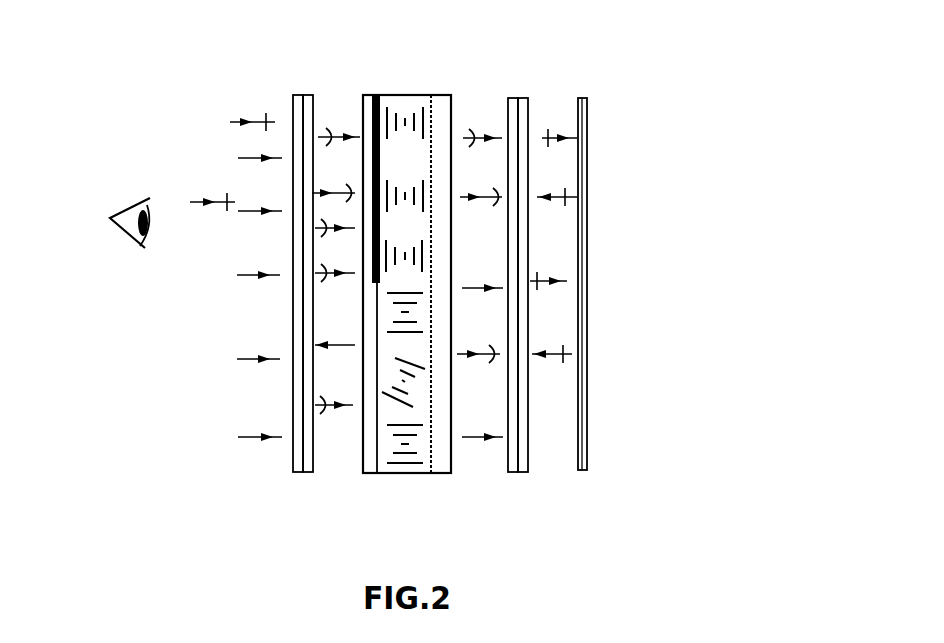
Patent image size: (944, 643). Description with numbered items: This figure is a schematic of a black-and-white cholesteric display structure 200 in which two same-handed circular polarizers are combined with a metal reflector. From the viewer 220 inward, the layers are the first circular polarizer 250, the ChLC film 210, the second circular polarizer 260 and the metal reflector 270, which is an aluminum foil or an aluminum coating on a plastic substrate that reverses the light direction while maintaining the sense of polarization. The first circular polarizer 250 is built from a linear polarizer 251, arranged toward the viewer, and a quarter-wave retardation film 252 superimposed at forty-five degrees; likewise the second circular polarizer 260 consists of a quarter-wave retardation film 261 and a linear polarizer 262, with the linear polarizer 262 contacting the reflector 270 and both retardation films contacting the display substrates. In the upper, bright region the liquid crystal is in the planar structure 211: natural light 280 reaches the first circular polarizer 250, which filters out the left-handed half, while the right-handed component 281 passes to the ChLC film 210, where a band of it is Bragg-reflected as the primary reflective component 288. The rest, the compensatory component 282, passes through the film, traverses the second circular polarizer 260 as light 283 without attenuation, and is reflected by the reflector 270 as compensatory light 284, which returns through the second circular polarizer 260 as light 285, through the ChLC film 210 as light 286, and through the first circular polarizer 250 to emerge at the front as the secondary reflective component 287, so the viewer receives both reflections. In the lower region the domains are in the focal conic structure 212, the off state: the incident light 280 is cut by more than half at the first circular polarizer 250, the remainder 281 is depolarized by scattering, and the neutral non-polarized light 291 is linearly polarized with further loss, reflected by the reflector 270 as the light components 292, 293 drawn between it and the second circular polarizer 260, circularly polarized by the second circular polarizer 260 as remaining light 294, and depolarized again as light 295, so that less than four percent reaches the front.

The liquid crystal display 200 is at (335, 289).
The ChLC film 210 is at (407, 293).
The planar structure 211 is at (404, 189).
The focal conic structure 212 is at (390, 442).
The viewer eye 220 is at (135, 249).
The first circular polarizer 250 is at (296, 293).
The linear polarizer 251 is at (292, 487).
The quarter-wave retardation film 252 is at (310, 480).
The second circular polarizer 260 is at (507, 292).
The quarter-wave retardation film 261 is at (507, 488).
The linear polarizer 262 is at (520, 487).
The metal reflector 270 is at (580, 93).
The natural light 280 is at (255, 283).
The right handed component 281 is at (338, 134).
The compensatory component 282 is at (484, 132).
The light passing second circular polarizer 283 is at (556, 122).
The compensatory light 284 is at (557, 186).
The light passing back through second circular polarizer 285 is at (475, 191).
The light passing back through ChLC film 286 is at (333, 179).
The secondary reflective component 287 is at (218, 193).
The primary reflective component 288 is at (250, 115).
The neutral non-polarized light 291 is at (473, 283).
The linearly polarized light 292 is at (546, 274).
The reflected light 293 is at (549, 346).
The remaining light 294 is at (473, 347).
The depolarized light 295 is at (333, 336).